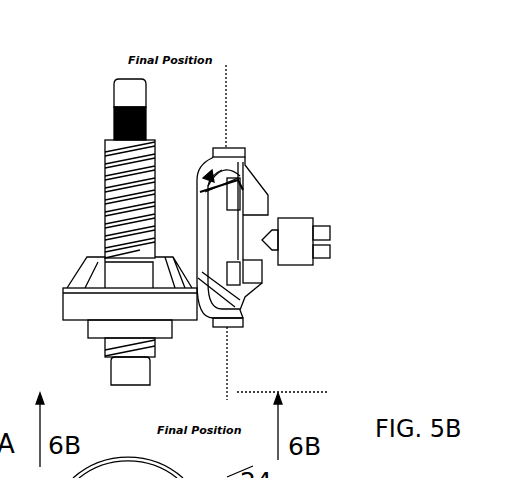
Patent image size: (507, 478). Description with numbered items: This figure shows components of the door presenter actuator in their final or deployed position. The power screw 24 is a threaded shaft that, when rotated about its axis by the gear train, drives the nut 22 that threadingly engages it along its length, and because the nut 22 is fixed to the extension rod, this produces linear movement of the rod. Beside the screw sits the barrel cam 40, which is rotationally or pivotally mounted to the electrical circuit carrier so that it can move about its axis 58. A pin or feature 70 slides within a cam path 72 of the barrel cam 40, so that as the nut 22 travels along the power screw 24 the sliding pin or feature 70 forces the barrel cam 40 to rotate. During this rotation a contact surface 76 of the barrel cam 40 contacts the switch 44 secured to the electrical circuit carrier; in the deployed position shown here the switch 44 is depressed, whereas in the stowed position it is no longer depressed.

The nut 22 is at (80, 295).
The power screw 24 is at (115, 182).
The barrel cam 40 is at (240, 186).
The switch 44 is at (293, 252).
The axis 58 is at (226, 103).
The pin or feature 70 is at (195, 283).
The cam path 72 is at (205, 172).
The contact surface 76 is at (263, 252).